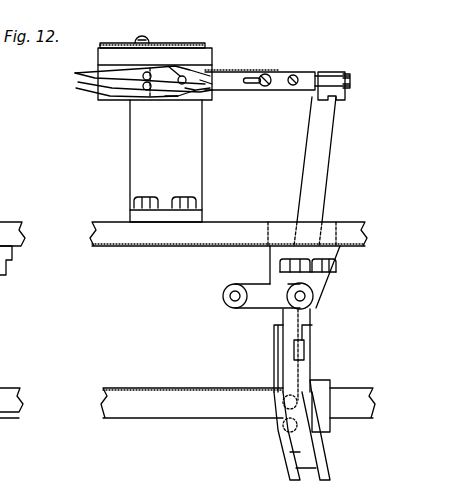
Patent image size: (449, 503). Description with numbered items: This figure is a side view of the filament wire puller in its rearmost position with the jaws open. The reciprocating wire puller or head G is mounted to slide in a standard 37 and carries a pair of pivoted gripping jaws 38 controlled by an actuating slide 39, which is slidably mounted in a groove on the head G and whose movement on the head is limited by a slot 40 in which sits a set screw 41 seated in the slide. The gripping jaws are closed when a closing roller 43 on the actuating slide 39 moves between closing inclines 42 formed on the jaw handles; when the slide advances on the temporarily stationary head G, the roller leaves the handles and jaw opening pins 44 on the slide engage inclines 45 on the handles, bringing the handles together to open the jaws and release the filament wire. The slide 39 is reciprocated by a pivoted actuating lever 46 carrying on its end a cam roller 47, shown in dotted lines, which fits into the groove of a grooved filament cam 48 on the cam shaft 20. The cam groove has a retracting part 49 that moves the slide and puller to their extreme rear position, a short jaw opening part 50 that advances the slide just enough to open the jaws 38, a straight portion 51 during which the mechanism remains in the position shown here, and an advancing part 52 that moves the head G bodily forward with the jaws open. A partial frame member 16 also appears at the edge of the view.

The standard 37 is at (205, 52).
The gripping jaws 38 is at (78, 74).
The actuating slide 39 is at (214, 100).
The slot 40 is at (252, 83).
The set screw 41 is at (272, 88).
The closing inclines 42 is at (190, 92).
The closing roller 43 is at (170, 97).
The jaw opening pins 44 is at (215, 80).
The inclines 45 is at (190, 76).
The actuating lever 46 is at (305, 157).
The cam roller 47 is at (276, 372).
The grooved filament cam 48 is at (312, 322).
The retracting part 49 is at (332, 384).
The jaw opening part 50 is at (274, 432).
The straight portion 51 is at (308, 356).
The advancing part 52 is at (294, 452).
The cam shaft 20 is at (352, 412).
The frame member 16 is at (9, 165).
The head G is at (262, 70).